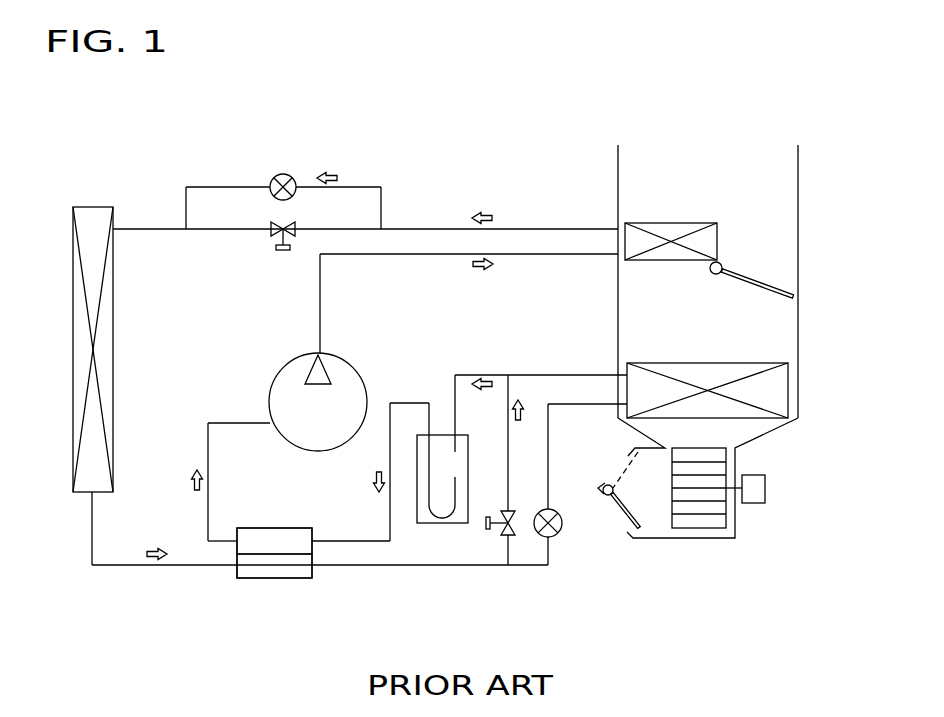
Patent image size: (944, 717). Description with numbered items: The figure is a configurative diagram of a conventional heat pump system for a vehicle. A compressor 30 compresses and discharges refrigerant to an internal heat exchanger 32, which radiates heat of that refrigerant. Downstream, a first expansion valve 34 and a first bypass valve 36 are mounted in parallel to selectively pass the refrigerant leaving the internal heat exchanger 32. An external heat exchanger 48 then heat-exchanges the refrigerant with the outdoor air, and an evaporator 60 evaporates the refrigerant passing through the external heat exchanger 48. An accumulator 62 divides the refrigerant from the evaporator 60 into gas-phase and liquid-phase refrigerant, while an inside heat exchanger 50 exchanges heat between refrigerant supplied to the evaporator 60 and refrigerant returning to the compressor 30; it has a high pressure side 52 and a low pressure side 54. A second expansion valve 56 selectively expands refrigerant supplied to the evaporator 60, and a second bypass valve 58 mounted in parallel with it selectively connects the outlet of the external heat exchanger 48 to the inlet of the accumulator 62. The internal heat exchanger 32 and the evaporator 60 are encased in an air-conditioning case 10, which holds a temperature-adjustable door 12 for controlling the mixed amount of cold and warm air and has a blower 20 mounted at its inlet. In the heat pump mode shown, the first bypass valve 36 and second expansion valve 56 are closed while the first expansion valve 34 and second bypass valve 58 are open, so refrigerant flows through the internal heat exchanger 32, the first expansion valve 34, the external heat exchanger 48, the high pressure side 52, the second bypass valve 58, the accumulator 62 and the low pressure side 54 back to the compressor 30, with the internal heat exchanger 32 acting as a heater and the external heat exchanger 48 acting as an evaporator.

The air-conditioning case 10 is at (800, 173).
The temperature-adjustable door 12 is at (760, 278).
The blower 20 is at (713, 468).
The compressor 30 is at (290, 366).
The internal heat exchanger 32 is at (668, 222).
The first expansion valve 34 is at (283, 174).
The first bypass valve 36 is at (280, 252).
The external heat exchanger 48 is at (93, 207).
The inside heat exchanger 50 is at (297, 580).
The high pressure side 52 is at (268, 572).
The low pressure side 54 is at (268, 535).
The second expansion valve 56 is at (560, 533).
The second bypass valve 58 is at (486, 531).
The evaporator 60 is at (772, 390).
The accumulator 62 is at (443, 435).